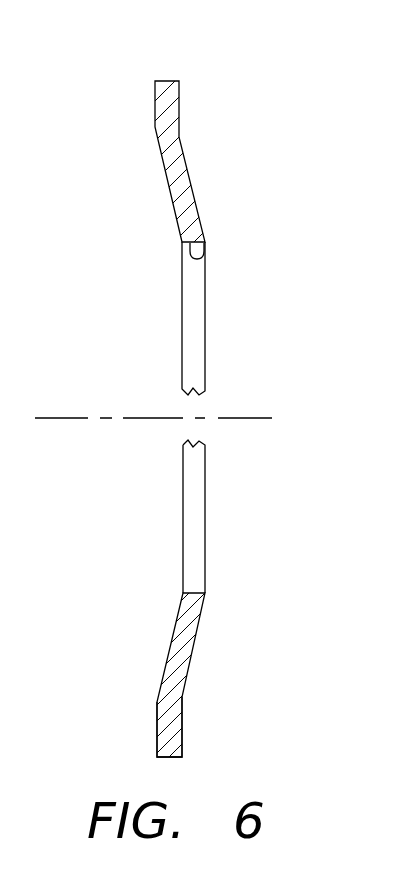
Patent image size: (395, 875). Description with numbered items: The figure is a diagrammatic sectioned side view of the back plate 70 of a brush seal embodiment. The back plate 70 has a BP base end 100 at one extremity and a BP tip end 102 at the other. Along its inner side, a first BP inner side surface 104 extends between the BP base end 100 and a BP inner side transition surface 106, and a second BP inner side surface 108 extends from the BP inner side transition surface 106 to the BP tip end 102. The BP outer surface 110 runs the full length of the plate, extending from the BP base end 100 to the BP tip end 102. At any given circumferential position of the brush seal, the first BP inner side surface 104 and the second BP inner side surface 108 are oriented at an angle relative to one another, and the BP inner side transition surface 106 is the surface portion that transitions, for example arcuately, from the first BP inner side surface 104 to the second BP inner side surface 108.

The back plate 70 is at (207, 437).
The BP base end 100 is at (166, 80).
The BP outer surface 110 is at (190, 171).
The BP tip end 102 is at (207, 260).
The second BP inner side surface 108 is at (205, 593).
The BP inner side transition surface 106 is at (157, 702).
The first BP inner side surface 104 is at (157, 702).